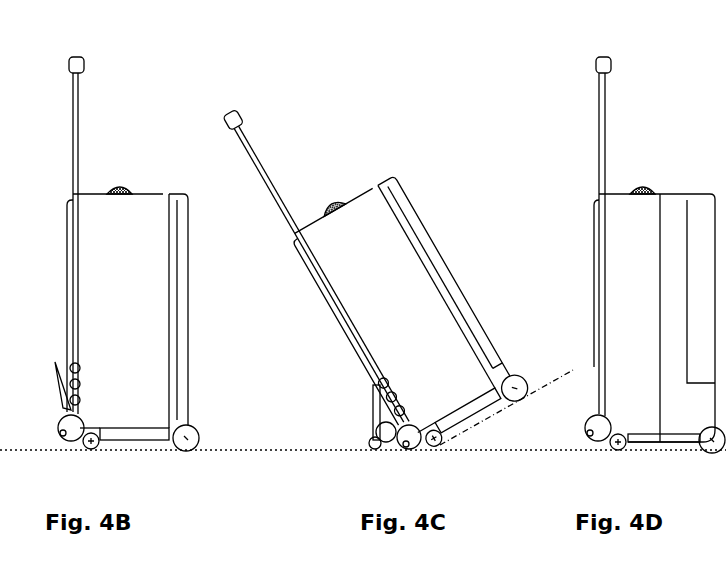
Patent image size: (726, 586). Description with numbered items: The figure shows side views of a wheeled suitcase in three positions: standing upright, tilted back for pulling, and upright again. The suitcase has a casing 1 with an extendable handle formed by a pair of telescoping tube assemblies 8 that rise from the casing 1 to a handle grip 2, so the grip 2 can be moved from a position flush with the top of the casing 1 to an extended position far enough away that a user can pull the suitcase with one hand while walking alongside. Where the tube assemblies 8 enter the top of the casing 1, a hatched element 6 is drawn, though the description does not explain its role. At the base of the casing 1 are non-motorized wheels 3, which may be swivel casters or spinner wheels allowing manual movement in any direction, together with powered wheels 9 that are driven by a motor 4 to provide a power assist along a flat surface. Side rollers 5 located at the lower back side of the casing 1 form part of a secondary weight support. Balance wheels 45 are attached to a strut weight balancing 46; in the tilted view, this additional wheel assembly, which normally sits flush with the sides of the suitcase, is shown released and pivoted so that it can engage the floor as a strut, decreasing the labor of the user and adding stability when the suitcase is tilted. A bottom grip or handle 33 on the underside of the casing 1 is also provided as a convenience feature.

In FIG. 4B, the casing 1 is at (137, 318).
In FIG. 4C, the casing 1 is at (398, 272).
In FIG. 4D, the casing 1 is at (670, 232).
In FIG. 4B, the handle grip 2 is at (86, 66).
In FIG. 4C, the handle grip 2 is at (240, 116).
In FIG. 4D, the handle grip 2 is at (612, 62).
In FIG. 4B, the wheels 3 is at (90, 450).
In FIG. 4C, the wheels 3 is at (522, 378).
In FIG. 4D, the wheels 3 is at (623, 450).
In FIG. 4B, the motor 4 is at (58, 426).
In FIG. 4C, the motor 4 is at (418, 436).
In FIG. 4D, the motor 4 is at (590, 426).
In FIG. 4B, the side rollers 5 is at (55, 362).
In FIG. 4C, the side rollers 5 is at (370, 415).
In FIG. 4B, the handle sleeve cushion 6 is at (119, 189).
In FIG. 4C, the handle sleeve cushion 6 is at (329, 208).
In FIG. 4D, the handle sleeve cushion 6 is at (628, 192).
In FIG. 4B, the telescoping tube assemblies 8 is at (71, 155).
In FIG. 4C, the telescoping tube assemblies 8 is at (265, 185).
In FIG. 4D, the telescoping tube assemblies 8 is at (600, 137).
In FIG. 4B, the wheels 9 is at (60, 433).
In FIG. 4C, the wheels 9 is at (408, 444).
In FIG. 4D, the wheels 9 is at (588, 434).
In FIG. 4B, the bottom grip or handle 33 is at (148, 442).
In FIG. 4C, the bottom grip or handle 33 is at (483, 408).
In FIG. 4D, the bottom grip or handle 33 is at (676, 444).
In FIG. 4C, the balance wheels 45 is at (373, 447).
In FIG. 4C, the strut weight balancing 46 is at (358, 412).